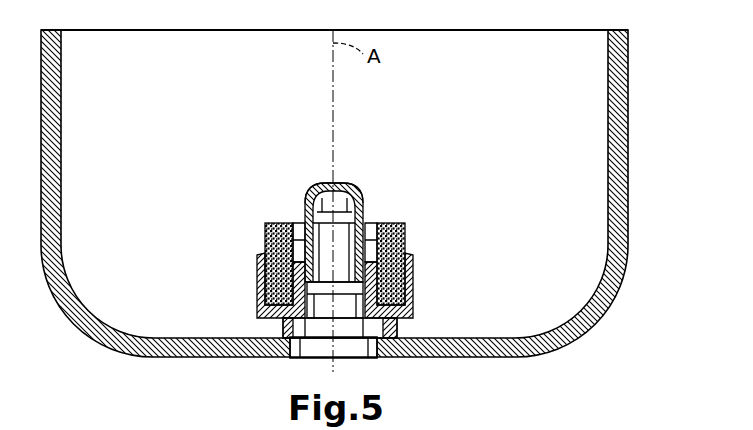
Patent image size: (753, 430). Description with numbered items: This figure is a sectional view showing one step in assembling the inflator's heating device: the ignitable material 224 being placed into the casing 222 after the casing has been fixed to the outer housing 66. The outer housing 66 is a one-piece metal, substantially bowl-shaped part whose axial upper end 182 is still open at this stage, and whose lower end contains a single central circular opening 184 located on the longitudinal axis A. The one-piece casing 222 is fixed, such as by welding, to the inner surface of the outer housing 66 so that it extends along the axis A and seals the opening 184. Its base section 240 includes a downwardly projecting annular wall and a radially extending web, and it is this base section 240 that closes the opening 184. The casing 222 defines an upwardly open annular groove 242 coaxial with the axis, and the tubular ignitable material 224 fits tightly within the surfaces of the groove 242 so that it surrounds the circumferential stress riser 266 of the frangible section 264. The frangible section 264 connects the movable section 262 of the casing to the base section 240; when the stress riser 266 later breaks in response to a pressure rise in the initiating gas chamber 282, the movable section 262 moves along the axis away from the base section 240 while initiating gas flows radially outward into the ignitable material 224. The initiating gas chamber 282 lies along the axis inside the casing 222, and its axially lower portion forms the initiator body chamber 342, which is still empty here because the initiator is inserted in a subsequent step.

The outer housing 66 is at (620, 231).
The open axial upper end 182 is at (590, 30).
The circular opening 184 is at (379, 345).
The casing 222 is at (346, 158).
The ignitable material 224 is at (406, 266).
The base section 240 is at (403, 328).
The annular groove 242 is at (404, 283).
The movable section 262 is at (358, 196).
The frangible section 264 is at (380, 243).
The circumferential stress riser 266 is at (265, 233).
The initiating gas chamber 282 is at (307, 222).
The initiator body chamber 342 is at (317, 327).